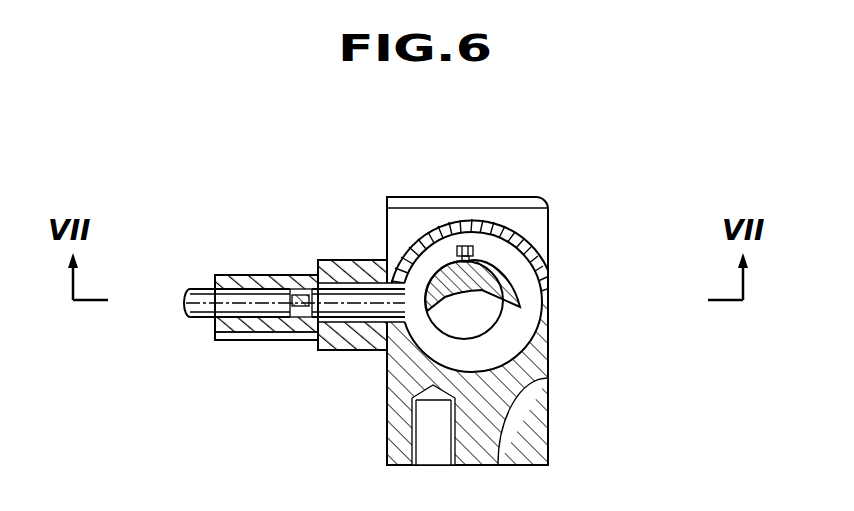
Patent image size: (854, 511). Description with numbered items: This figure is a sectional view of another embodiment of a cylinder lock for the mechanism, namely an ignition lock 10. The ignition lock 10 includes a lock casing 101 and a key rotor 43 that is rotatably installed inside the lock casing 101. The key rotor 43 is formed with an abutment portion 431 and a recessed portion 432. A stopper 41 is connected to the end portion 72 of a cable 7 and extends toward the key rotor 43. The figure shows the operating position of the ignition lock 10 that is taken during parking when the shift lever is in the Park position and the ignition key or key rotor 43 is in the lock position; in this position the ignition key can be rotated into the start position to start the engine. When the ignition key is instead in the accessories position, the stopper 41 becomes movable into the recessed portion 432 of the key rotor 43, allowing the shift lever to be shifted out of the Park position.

The ignition lock 10 is at (556, 313).
The abutment portion 431 is at (485, 222).
The lock casing 101 is at (523, 239).
The recessed portion 432 is at (475, 315).
The key rotor 43 is at (533, 268).
The stopper 41 is at (359, 352).
The cable 7 is at (251, 340).
The end portion 72 is at (298, 340).